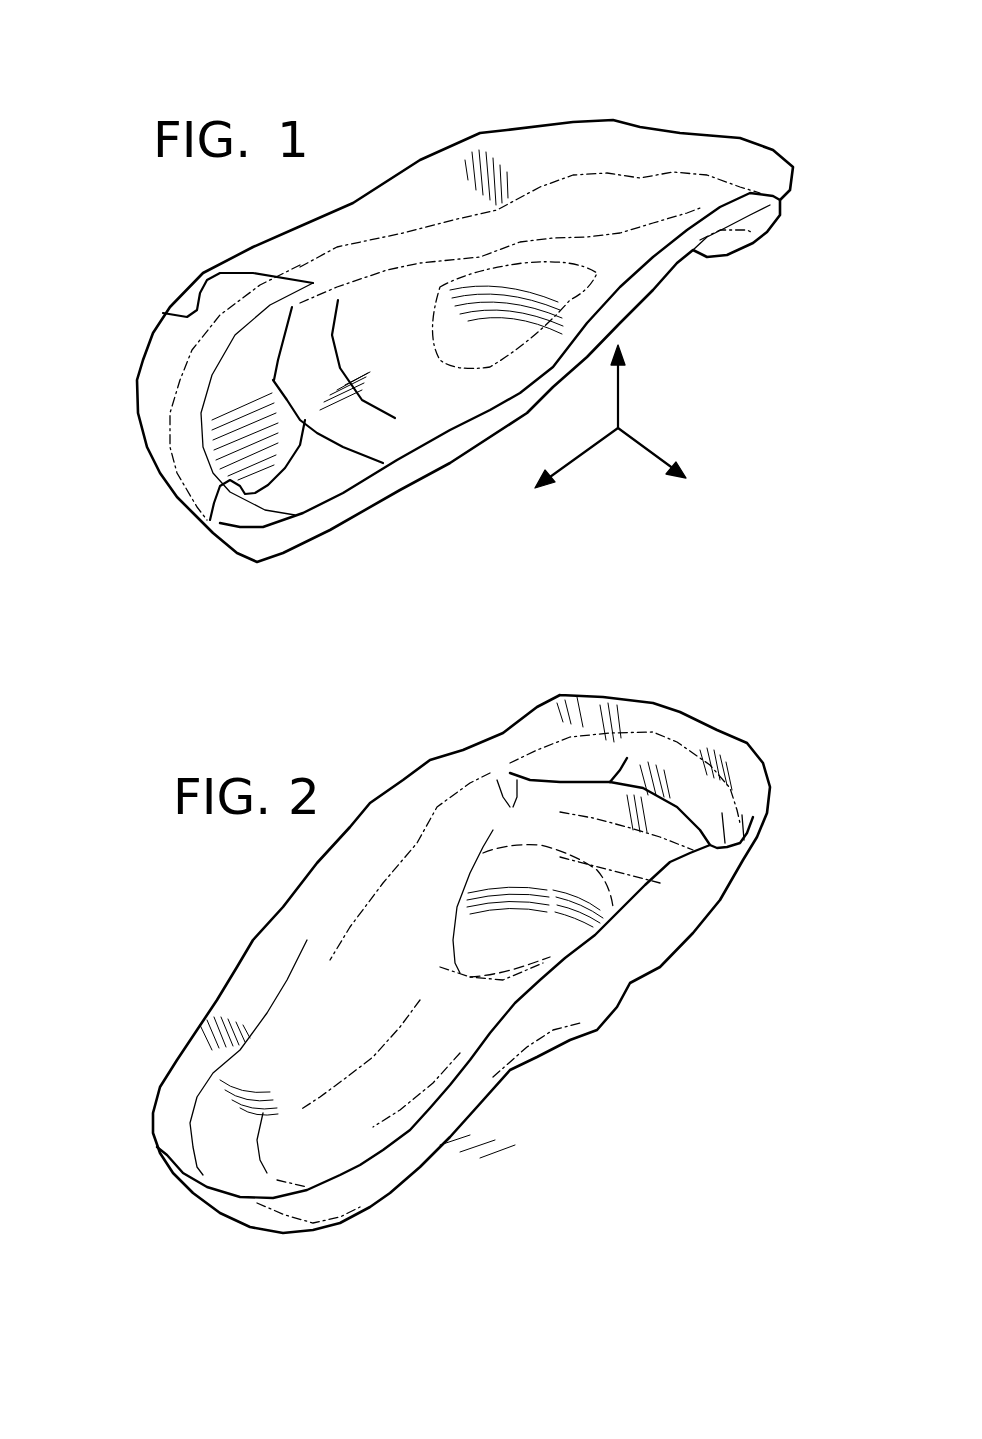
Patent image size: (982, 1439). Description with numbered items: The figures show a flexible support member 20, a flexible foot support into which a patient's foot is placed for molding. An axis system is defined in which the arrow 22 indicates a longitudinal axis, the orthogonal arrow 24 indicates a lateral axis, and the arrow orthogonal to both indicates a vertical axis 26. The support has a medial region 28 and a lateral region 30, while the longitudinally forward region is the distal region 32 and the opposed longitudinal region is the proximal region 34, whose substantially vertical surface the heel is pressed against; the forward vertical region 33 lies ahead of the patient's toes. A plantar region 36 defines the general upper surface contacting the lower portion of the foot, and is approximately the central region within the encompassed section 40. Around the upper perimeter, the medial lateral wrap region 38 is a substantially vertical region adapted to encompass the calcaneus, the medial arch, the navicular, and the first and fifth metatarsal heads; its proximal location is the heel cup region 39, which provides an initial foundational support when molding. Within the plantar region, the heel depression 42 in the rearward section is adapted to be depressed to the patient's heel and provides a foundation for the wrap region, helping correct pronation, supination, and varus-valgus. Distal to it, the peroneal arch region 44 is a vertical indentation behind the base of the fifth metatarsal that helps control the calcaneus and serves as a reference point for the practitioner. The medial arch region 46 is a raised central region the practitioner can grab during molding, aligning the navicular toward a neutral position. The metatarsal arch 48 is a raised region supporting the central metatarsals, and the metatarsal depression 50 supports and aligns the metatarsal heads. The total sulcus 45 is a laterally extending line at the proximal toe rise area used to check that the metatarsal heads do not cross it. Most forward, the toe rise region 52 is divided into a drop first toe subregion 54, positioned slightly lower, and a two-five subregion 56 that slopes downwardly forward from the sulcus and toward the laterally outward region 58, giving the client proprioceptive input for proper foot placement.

In FIG. 1, the flexible support member 20 is at (436, 341).
In FIG. 2, the flexible support member 20 is at (430, 964).
In FIG. 1, the longitudinal axis 22 is at (599, 470).
In FIG. 1, the lateral axis 24 is at (704, 450).
In FIG. 1, the vertical axis 26 is at (688, 386).
In FIG. 1, the medial region 28 is at (615, 306).
In FIG. 1, the lateral region 30 is at (199, 392).
In FIG. 1, the distal region 32 is at (278, 488).
In FIG. 2, the distal region 32 is at (613, 664).
In FIG. 2, the forward vertical region 33 is at (706, 621).
In FIG. 1, the proximal region 34 is at (718, 134).
In FIG. 1, the plantar region 36 is at (484, 336).
In FIG. 1, the medial lateral wrap region 38 is at (530, 154).
In FIG. 2, the medial lateral wrap region 38 is at (300, 866).
In FIG. 2, the heel cup region 39 is at (258, 1089).
In FIG. 2, the encompassed section 40 is at (593, 673).
In FIG. 2, the heel depression 42 is at (374, 1247).
In FIG. 1, the peroneal arch region 44 is at (500, 266).
In FIG. 2, the peroneal arch region 44 is at (428, 1178).
In FIG. 2, the total sulcus 45 is at (478, 742).
In FIG. 2, the medial arch region 46 is at (268, 1002).
In FIG. 2, the metatarsal arch 48 is at (571, 975).
In FIG. 1, the metatarsal depression 50 is at (359, 442).
In FIG. 2, the metatarsal depression 50 is at (512, 1021).
In FIG. 2, the toe rise region 52 is at (641, 718).
In FIG. 2, the drop first toe subregion 54 is at (579, 736).
In FIG. 2, the two-five subregion 56 is at (749, 815).
In FIG. 2, the laterally outward region 58 is at (740, 759).